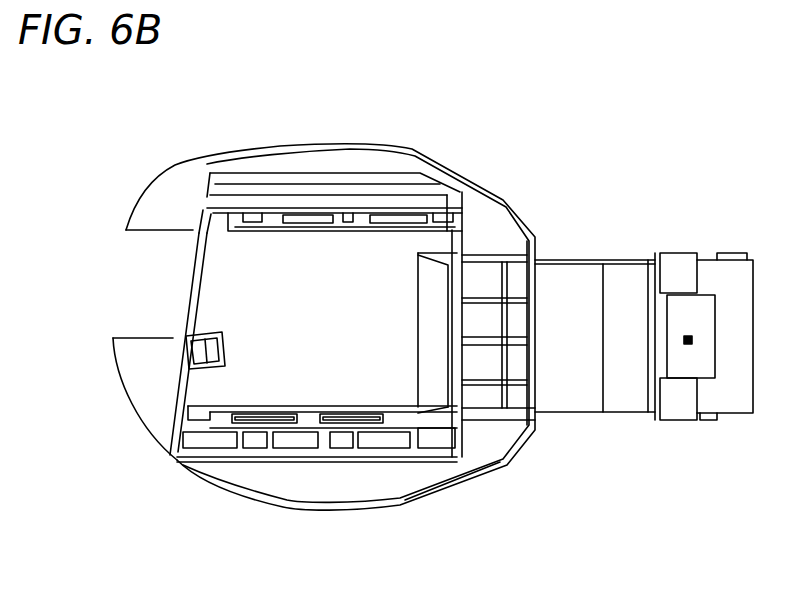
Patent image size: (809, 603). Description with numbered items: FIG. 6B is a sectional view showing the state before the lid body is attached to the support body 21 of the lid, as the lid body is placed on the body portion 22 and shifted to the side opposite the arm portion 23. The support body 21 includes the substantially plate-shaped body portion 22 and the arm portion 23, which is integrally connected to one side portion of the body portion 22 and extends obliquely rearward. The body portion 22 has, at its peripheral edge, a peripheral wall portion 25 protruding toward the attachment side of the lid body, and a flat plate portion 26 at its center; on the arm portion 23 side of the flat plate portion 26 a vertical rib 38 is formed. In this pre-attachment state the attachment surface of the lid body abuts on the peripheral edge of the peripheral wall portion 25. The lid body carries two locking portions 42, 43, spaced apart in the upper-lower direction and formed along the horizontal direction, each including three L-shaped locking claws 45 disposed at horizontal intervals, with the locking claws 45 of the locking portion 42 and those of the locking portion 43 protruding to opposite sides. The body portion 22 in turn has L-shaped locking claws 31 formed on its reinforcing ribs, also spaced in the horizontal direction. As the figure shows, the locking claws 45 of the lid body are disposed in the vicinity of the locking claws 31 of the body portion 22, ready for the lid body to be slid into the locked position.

The support body 21 is at (522, 207).
The body portion 22 is at (455, 172).
The arm portion 23 is at (635, 258).
The peripheral wall portion 25 is at (483, 472).
The flat plate portion 26 is at (228, 287).
The locking claw 31 is at (279, 213).
The vertical rib 38 is at (460, 244).
The locking portion 42 is at (342, 230).
The locking portion 43 is at (307, 405).
The locking claw 45 is at (249, 228).